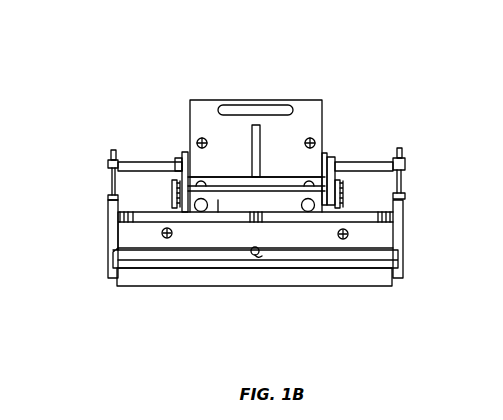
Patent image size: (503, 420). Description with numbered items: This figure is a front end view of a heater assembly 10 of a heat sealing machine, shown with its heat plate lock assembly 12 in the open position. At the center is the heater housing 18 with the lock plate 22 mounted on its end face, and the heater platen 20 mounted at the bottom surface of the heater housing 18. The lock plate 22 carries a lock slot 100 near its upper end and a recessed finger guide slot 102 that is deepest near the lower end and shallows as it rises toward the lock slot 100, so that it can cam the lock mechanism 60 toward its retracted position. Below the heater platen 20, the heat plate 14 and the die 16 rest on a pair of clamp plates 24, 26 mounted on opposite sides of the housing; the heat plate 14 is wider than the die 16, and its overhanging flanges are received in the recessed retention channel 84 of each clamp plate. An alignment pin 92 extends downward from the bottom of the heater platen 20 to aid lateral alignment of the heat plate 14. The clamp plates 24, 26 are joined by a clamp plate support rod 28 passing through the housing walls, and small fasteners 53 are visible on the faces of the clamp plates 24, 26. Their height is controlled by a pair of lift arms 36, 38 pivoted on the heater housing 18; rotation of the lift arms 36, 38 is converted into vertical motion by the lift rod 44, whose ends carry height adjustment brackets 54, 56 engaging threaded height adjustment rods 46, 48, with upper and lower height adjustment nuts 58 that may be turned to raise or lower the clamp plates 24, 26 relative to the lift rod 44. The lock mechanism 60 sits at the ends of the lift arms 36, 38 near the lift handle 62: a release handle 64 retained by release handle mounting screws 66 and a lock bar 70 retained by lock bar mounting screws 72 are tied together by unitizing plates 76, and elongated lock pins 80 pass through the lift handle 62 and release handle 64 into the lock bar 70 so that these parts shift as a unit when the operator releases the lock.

The heater assembly 10 is at (329, 66).
The heat plate lock assembly 12 is at (428, 284).
The heat plate 14 is at (132, 266).
The die 16 is at (288, 277).
The heater housing 18 is at (323, 127).
The heater platen 20 is at (383, 235).
The lock plate 22 is at (205, 120).
The clamp plate 24 is at (117, 236).
The clamp plate 26 is at (396, 213).
The clamp plate support rod 28 is at (375, 203).
The lift arm 36 is at (187, 162).
The lift arm 38 is at (328, 155).
The lift rod 44 is at (148, 160).
The height adjustment rod 46 is at (112, 181).
The height adjustment rod 48 is at (404, 188).
The screw 53 is at (166, 239).
The height adjustment bracket 54 is at (108, 163).
The height adjustment bracket 56 is at (108, 164).
The height adjustment nut 58 is at (116, 158).
The lock mechanism 60 is at (241, 238).
The lift handle 62 is at (219, 203).
The release handle 64 is at (217, 179).
The release handle mounting screw 66 is at (172, 197).
The lock bar 70 is at (289, 180).
The lock bar mounting screw 72 is at (172, 186).
The unitizing plate 76 is at (177, 192).
The lock pin 80 is at (201, 212).
The retention channel 84 is at (117, 254).
The alignment pin 92 is at (259, 258).
The lock slot 100 is at (237, 110).
The finger guide slot 102 is at (259, 131).